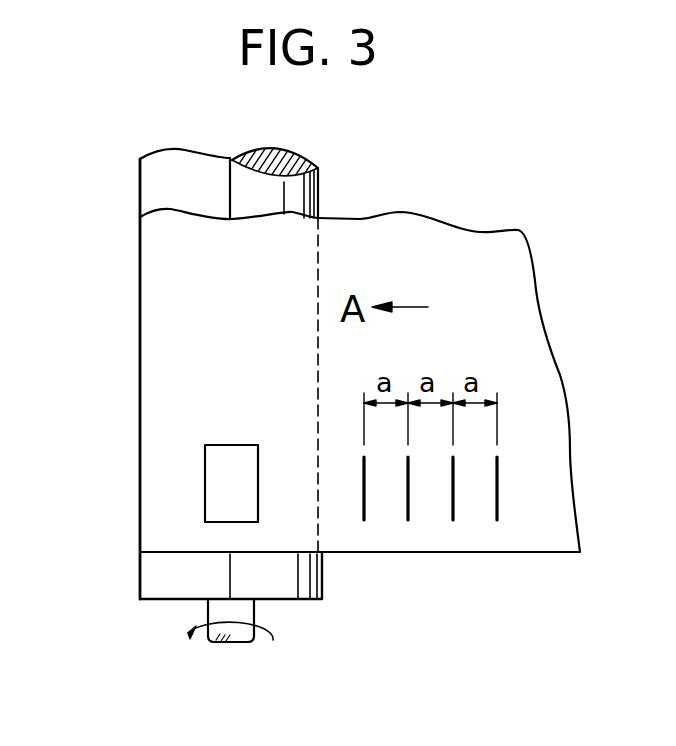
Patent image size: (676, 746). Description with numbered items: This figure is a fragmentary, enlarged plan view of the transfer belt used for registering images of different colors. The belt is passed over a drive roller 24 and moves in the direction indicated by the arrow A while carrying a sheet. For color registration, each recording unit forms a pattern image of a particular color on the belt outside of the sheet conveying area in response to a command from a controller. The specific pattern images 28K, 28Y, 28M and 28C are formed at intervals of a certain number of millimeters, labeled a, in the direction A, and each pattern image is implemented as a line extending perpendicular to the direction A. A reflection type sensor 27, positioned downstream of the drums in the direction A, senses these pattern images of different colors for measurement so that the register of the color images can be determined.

The drive roller 24 is at (153, 600).
The reflection type sensor 27 is at (205, 478).
The pattern image 28K is at (364, 528).
The pattern image 28Y is at (408, 528).
The pattern image 28M is at (453, 528).
The pattern image 28C is at (497, 528).